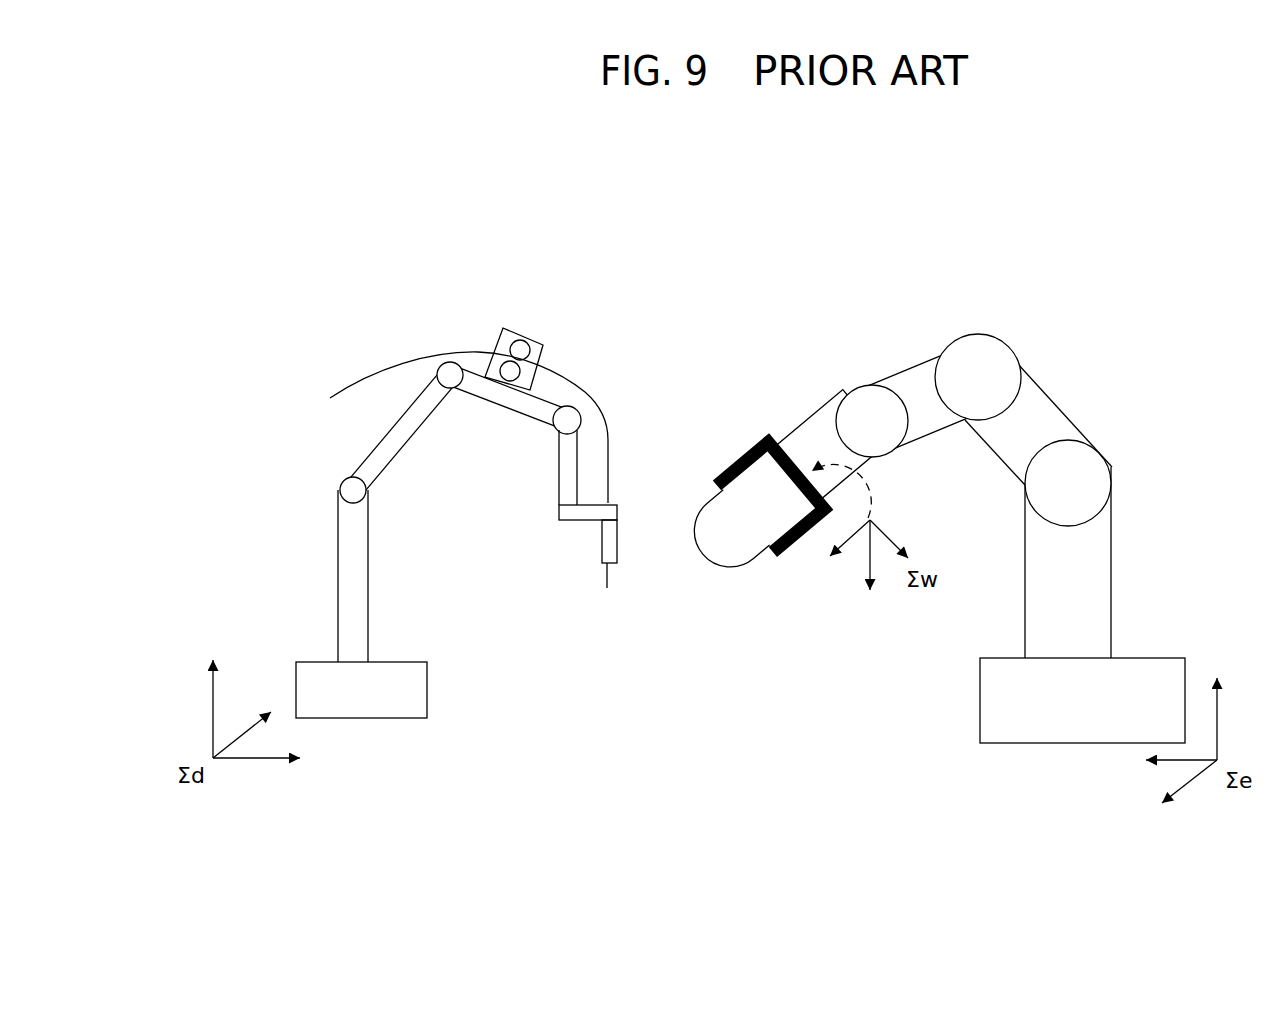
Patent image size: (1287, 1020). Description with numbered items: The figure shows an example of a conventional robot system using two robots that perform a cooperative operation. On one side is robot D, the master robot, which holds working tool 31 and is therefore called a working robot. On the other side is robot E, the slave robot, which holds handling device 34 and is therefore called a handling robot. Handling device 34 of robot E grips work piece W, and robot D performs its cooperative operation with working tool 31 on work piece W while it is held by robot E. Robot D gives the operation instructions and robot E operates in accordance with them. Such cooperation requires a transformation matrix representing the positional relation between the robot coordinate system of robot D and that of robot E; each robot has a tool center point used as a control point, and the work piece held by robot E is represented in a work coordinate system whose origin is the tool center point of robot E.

The working tool 31 is at (625, 538).
The handling device 34 is at (792, 560).
The work piece W is at (697, 568).
The robot D is at (340, 465).
The robot E is at (1117, 435).